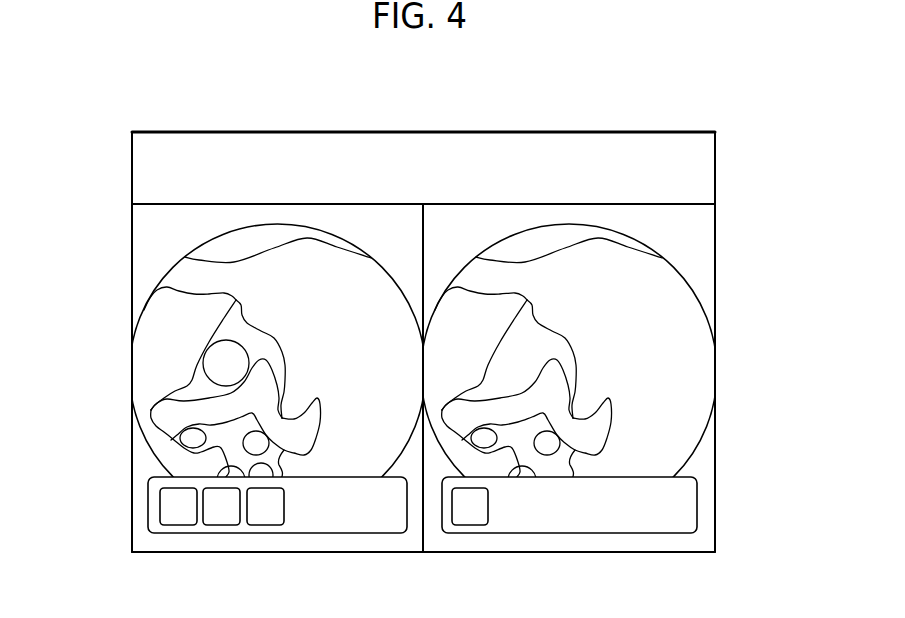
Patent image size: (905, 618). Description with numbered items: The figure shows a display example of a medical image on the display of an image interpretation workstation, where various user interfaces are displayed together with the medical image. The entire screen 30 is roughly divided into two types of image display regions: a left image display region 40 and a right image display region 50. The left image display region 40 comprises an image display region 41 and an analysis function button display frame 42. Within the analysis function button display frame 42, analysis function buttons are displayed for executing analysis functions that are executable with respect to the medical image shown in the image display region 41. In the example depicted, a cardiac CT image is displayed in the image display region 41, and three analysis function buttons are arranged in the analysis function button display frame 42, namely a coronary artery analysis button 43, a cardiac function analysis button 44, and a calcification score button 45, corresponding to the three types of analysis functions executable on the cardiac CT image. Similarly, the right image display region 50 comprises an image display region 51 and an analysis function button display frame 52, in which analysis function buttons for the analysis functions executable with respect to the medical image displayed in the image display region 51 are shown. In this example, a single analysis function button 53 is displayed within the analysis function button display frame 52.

The entire screen 30 is at (677, 132).
The left image display region 40 is at (132, 240).
The image display region 41 is at (158, 360).
The analysis function button display frame 42 is at (148, 508).
The coronary artery analysis button 43 is at (178, 518).
The cardiac function analysis button 44 is at (222, 518).
The calcification score button 45 is at (267, 518).
The right image display region 50 is at (716, 240).
The image display region 51 is at (675, 343).
The analysis function button display frame 52 is at (697, 502).
The analysis function button 53 is at (470, 518).